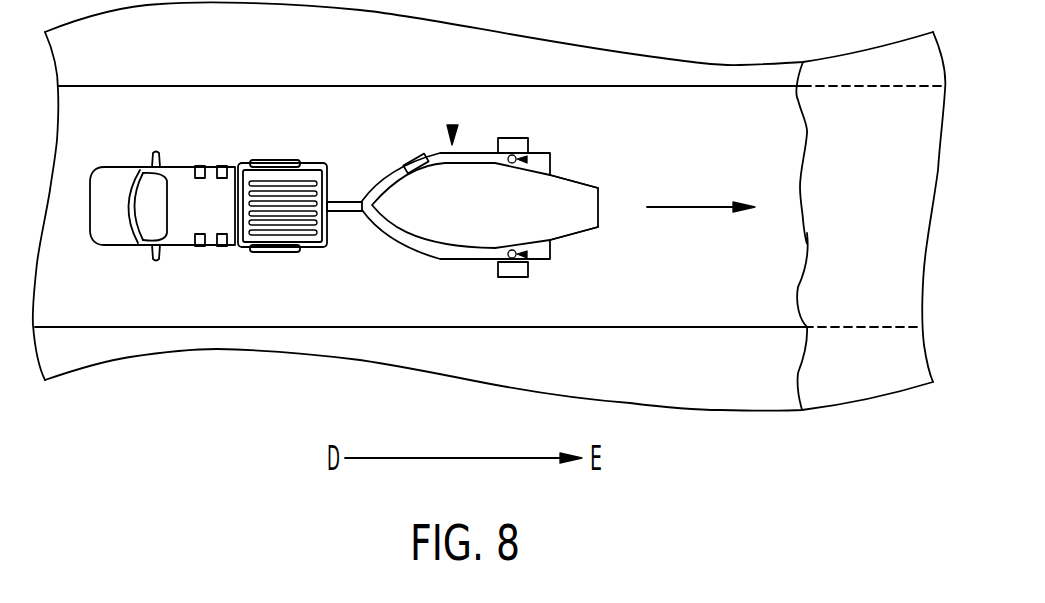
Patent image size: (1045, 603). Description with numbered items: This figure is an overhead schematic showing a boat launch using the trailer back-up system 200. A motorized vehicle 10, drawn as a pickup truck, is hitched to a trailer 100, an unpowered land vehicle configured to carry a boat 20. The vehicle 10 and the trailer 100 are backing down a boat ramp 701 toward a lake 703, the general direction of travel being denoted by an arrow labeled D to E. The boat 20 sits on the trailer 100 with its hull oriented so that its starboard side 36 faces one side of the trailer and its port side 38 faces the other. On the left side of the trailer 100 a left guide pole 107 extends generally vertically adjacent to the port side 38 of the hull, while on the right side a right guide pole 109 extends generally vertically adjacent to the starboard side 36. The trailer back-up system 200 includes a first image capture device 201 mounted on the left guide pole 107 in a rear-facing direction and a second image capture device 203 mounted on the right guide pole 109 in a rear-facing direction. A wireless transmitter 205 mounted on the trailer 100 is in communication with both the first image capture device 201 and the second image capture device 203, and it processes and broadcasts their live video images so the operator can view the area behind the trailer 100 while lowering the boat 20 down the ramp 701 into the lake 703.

The vehicle 10 is at (233, 168).
The boat 20 is at (437, 233).
The starboard side 36 is at (583, 182).
The port side 38 is at (583, 230).
The trailer 100 is at (382, 233).
The left guide pole 107 is at (512, 258).
The right guide pole 109 is at (512, 156).
The trailer back-up system 200 is at (449, 124).
The first image capture device 201 is at (521, 256).
The second image capture device 203 is at (521, 161).
The wireless transmitter 205 is at (412, 158).
The boat ramp 701 is at (737, 85).
The lake 703 is at (880, 123).